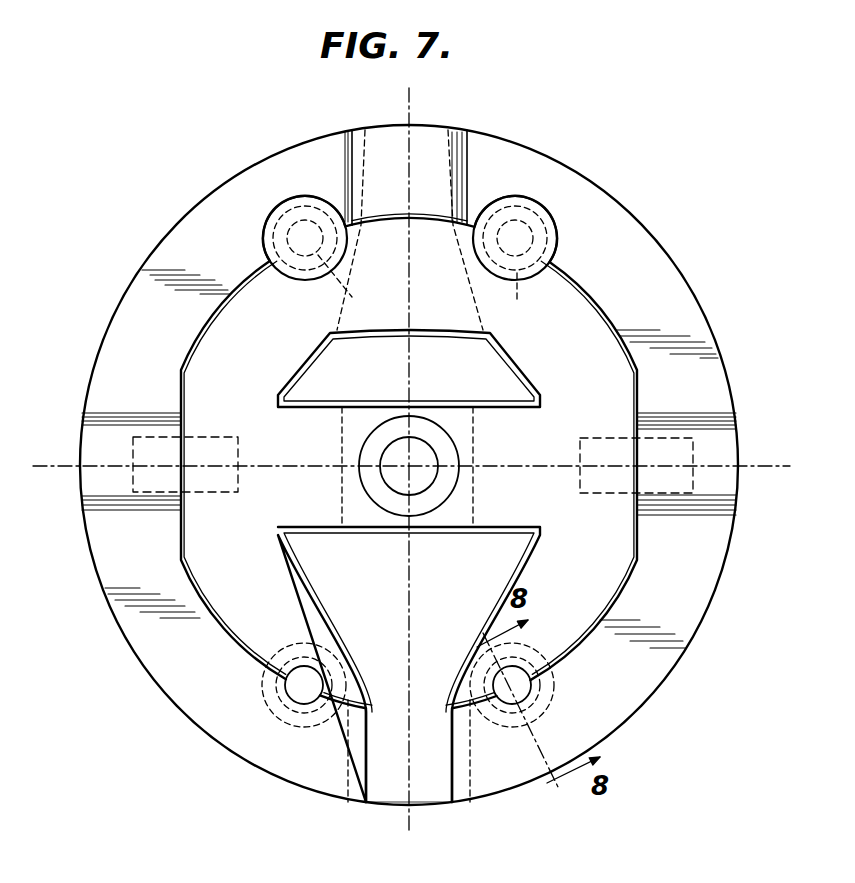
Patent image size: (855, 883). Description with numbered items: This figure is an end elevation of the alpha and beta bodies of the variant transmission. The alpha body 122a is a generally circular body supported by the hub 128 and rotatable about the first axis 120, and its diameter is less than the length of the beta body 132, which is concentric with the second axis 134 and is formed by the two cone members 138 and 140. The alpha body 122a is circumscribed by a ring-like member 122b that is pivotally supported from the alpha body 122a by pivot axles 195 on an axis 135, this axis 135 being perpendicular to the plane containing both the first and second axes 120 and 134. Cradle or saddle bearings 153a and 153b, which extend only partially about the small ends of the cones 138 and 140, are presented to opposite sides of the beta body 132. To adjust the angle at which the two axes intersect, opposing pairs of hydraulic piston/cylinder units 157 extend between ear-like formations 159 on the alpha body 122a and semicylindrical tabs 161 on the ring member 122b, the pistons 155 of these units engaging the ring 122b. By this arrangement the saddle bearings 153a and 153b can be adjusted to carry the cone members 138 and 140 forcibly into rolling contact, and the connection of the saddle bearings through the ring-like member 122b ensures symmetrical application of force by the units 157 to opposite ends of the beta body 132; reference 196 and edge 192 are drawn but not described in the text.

The first axis 120 is at (409, 110).
The second axis 134 is at (440, 90).
The cradle bearing 153a is at (433, 138).
The cradle bearing 153b is at (443, 803).
The ear-like formations 159 is at (284, 193).
The hydraulic piston/cylinder units 157 is at (263, 238).
The semicylindrical tabs 161 is at (520, 669).
The alpha body 122a is at (277, 357).
The ring-like member 122b is at (580, 204).
The hydraulic pistons 155 is at (350, 292).
The cone member 138 is at (423, 382).
The cone member 140 is at (422, 608).
The beta body 132 is at (534, 376).
The hub 128 is at (445, 494).
The axis 135 is at (58, 463).
The pivot axles 195 is at (208, 480).
The groove 196 is at (92, 478).
The edge 192 is at (513, 562).